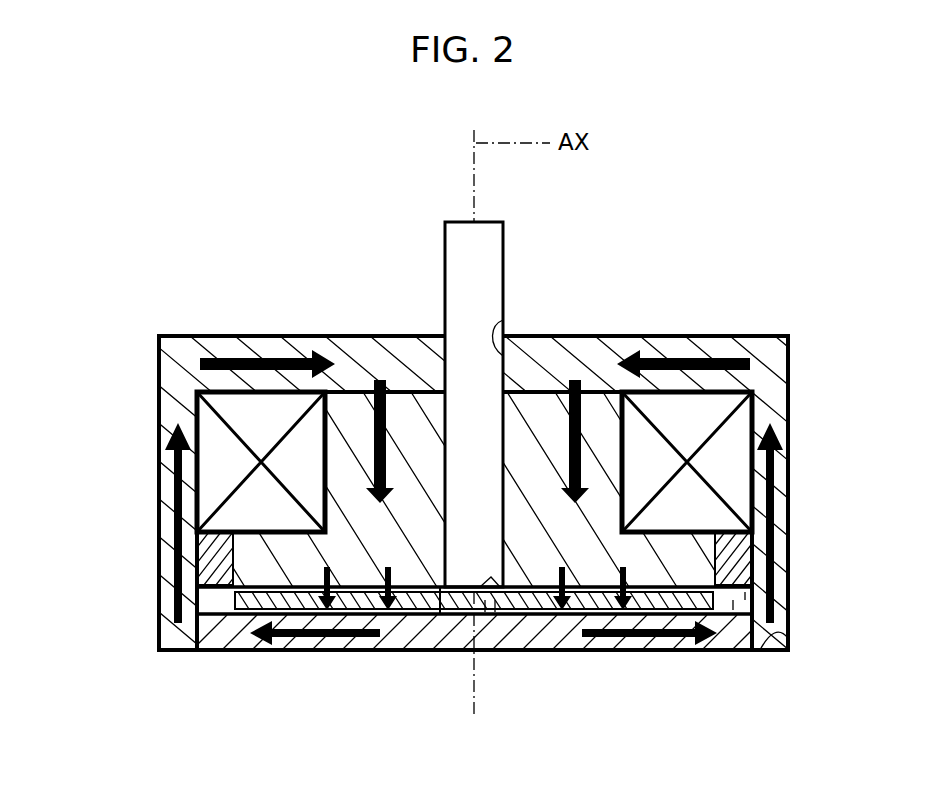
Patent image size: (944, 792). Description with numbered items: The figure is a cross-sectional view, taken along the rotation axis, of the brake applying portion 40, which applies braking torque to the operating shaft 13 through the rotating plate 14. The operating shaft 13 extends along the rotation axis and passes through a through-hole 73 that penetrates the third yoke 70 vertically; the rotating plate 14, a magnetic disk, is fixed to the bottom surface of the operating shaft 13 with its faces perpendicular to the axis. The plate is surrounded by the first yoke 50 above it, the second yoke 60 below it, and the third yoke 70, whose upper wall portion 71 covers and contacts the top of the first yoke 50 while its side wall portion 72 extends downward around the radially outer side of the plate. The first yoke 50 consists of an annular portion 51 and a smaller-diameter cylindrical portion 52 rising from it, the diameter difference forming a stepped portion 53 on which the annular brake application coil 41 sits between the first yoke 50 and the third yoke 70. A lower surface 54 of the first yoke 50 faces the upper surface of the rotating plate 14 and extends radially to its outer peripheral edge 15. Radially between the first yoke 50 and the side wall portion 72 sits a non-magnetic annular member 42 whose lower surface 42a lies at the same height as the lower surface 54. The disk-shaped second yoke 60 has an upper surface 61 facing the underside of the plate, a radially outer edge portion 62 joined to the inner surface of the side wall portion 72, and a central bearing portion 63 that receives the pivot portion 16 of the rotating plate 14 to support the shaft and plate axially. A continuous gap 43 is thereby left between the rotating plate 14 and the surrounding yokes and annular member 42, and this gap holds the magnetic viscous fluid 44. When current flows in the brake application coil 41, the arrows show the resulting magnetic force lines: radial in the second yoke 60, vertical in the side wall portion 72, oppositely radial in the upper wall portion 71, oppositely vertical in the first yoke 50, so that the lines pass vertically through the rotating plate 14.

The operating shaft 13 is at (490, 267).
The rotating plate 14 is at (440, 605).
The outer peripheral edge 15 is at (738, 608).
The pivot portion 16 is at (442, 640).
The brake applying portion 40 is at (146, 678).
The brake application coil 41 is at (720, 405).
The annular member 42 is at (745, 552).
The lower surface 42a is at (748, 604).
The gap 43 is at (222, 605).
The magnetic viscous fluid 44 is at (745, 618).
The first yoke 50 is at (412, 400).
The annular portion 51 is at (713, 583).
The cylindrical portion 52 is at (598, 420).
The stepped portion 53 is at (630, 522).
The lower surface 54 is at (654, 640).
The second yoke 60 is at (303, 640).
The upper surface 61 is at (235, 603).
The radially outer edge portion 62 is at (785, 650).
The bearing portion 63 is at (490, 600).
The third yoke 70 is at (784, 338).
The upper wall portion 71 is at (723, 345).
The side wall portion 72 is at (770, 405).
The through-hole 73 is at (496, 322).